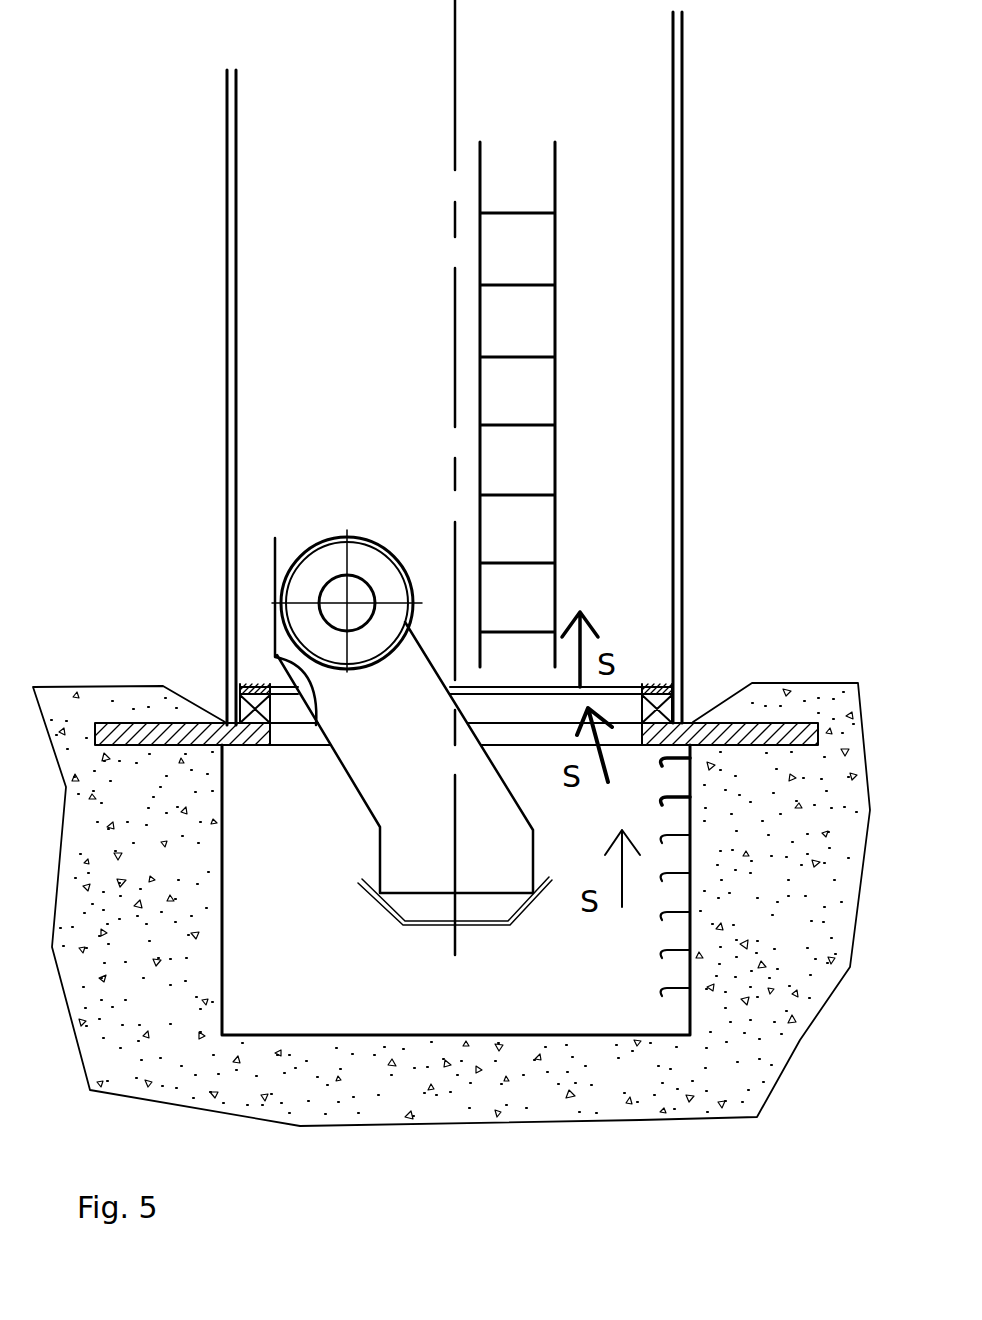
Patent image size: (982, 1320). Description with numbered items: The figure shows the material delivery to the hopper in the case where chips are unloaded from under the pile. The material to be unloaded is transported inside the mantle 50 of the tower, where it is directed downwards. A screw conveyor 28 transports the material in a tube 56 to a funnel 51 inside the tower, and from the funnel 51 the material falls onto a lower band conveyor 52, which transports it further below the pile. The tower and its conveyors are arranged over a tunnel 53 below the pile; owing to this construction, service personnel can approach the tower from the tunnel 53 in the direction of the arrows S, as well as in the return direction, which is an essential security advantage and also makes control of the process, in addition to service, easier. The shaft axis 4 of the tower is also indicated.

The elevator shaft centerline 4 is at (455, 93).
The screw conveyor 28 is at (320, 563).
The mantle 50 is at (683, 538).
The funnel 51 is at (275, 666).
The lower band conveyor 52 is at (413, 930).
The tunnel 53 is at (587, 1017).
The tube 56 is at (293, 558).